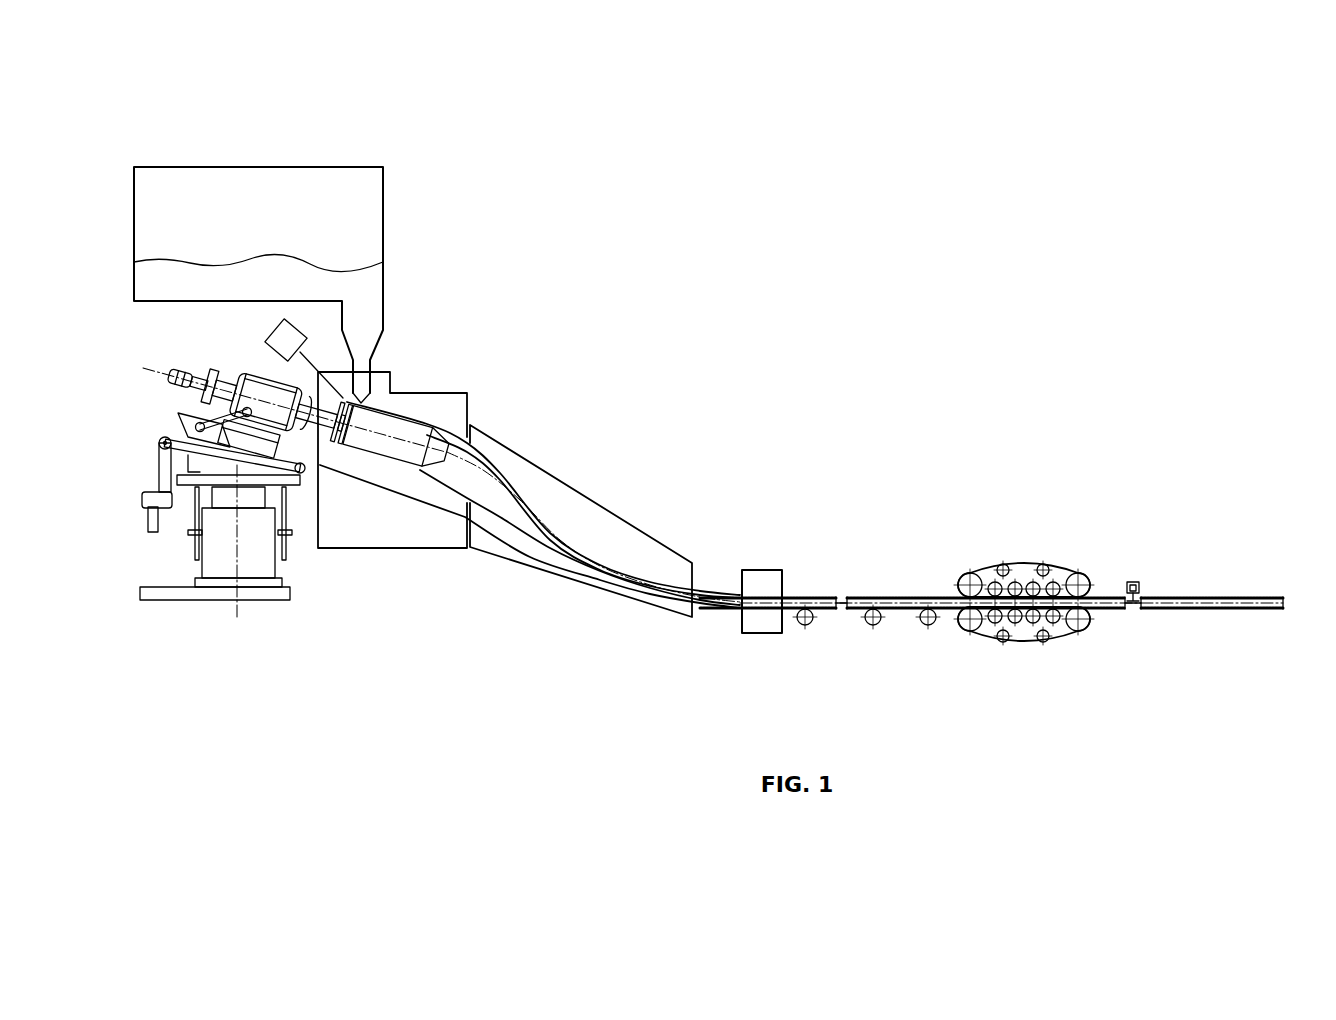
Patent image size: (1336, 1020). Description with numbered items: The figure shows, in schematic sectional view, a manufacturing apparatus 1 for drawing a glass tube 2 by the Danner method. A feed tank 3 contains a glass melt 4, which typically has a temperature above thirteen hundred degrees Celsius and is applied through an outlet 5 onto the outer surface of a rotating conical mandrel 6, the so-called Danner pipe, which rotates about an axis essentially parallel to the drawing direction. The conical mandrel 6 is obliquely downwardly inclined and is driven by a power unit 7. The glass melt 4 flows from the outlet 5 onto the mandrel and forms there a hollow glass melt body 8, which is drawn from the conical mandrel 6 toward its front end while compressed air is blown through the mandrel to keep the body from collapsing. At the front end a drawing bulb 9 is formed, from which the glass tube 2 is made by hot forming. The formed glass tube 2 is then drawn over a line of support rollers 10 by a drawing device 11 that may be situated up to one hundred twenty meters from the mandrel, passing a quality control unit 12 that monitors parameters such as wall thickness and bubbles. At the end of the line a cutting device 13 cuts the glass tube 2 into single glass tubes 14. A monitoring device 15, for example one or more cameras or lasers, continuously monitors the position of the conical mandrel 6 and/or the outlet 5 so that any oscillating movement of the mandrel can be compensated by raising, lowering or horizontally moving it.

The manufacturing apparatus 1 is at (170, 636).
The glass tube 2 is at (857, 595).
The feed tank 3 is at (343, 183).
The glass melt 4 is at (360, 287).
The outlet 5 is at (392, 380).
The conical mandrel 6 is at (383, 452).
The power unit 7 is at (258, 555).
The hollow glass melt body 8 is at (437, 420).
The drawing bulb 9 is at (480, 485).
The support rollers 10 is at (805, 626).
The drawing device 11 is at (1018, 565).
The quality control unit 12 is at (760, 568).
The cutting device 13 is at (1133, 580).
The single glass tubes 14 is at (1202, 610).
The monitoring device 15 is at (267, 335).